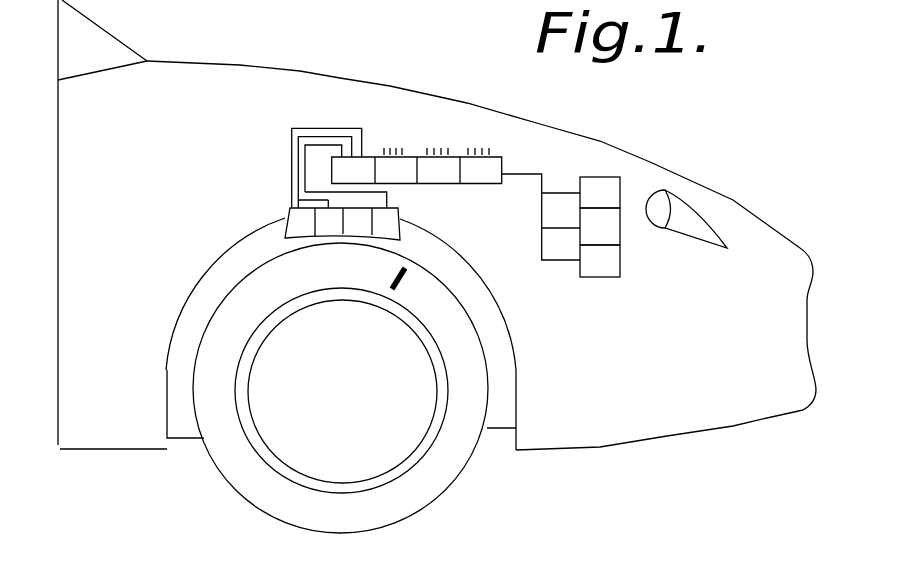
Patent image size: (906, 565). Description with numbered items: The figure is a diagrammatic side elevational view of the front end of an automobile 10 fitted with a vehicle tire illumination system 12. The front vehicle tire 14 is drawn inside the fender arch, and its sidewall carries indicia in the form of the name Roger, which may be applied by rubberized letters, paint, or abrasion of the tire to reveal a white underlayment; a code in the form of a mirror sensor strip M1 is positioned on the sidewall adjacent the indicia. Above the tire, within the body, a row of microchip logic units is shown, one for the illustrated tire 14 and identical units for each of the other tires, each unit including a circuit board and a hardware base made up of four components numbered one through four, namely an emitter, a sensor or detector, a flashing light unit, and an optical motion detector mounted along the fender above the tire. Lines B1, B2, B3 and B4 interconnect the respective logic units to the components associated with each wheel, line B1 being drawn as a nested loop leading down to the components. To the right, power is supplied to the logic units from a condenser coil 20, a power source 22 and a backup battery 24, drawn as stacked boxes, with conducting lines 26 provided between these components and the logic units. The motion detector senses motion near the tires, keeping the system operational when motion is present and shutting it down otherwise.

The automobile 10 is at (668, 422).
The vehicle tire illumination system 12 is at (429, 84).
The vehicle tire 14 is at (443, 475).
The condenser coil 20 is at (608, 188).
The power source 22 is at (607, 233).
The backup battery 24 is at (603, 267).
The conducting lines 26 is at (525, 174).
The mirror sensor strip M1 is at (395, 290).
The line B1 is at (339, 149).
The line B2 is at (394, 129).
The line B3 is at (433, 130).
The line B4 is at (480, 131).